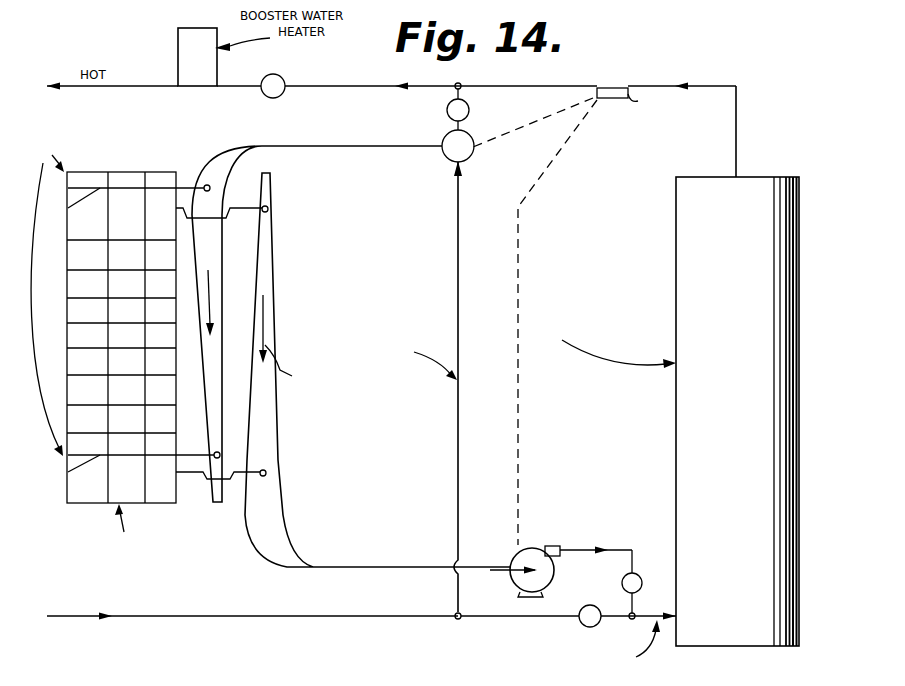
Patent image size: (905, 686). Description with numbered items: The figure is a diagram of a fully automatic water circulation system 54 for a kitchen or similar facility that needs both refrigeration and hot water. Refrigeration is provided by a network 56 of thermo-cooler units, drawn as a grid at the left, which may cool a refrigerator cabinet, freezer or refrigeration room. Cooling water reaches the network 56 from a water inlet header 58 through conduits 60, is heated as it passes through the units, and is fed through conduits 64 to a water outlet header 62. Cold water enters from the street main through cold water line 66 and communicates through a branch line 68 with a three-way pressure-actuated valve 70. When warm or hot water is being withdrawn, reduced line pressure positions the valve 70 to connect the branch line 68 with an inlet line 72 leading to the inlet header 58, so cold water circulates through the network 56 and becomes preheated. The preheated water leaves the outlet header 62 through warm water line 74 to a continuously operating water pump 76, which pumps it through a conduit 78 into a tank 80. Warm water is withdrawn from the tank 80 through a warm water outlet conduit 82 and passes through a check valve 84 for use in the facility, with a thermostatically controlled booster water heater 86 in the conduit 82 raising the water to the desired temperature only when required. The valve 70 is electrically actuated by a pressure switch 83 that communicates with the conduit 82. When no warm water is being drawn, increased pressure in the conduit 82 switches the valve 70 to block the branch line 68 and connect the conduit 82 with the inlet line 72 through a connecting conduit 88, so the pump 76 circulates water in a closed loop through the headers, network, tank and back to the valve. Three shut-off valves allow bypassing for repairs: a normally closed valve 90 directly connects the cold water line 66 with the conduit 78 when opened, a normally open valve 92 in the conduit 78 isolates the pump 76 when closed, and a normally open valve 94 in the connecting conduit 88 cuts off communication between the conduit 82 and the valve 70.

The automatic water circulation system 54 is at (730, 64).
The network of thermo-cooler units 56 is at (70, 512).
The water inlet header 58 is at (215, 256).
The inlet conduits 60 is at (204, 186).
The water outlet header 62 is at (272, 424).
The outlet conduits 64 is at (262, 208).
The cold water line 66 is at (280, 616).
The branch line 68 is at (460, 428).
The three-way pressure-actuated valve 70 is at (468, 164).
The inlet line 72 is at (367, 146).
The warm water line 74 is at (378, 569).
The water pump 76 is at (528, 546).
The pump outlet conduit 78 is at (652, 612).
The tank 80 is at (676, 424).
The warm water outlet conduit 82 is at (582, 86).
The pressure switch 83 is at (617, 98).
The check valve 84 is at (285, 78).
The booster water heater 86 is at (178, 46).
The connecting conduit 88 is at (466, 130).
The normally closed shut-off valve 90 is at (580, 624).
The second shut-off valve 92 is at (620, 585).
The third shut-off valve 94 is at (447, 108).